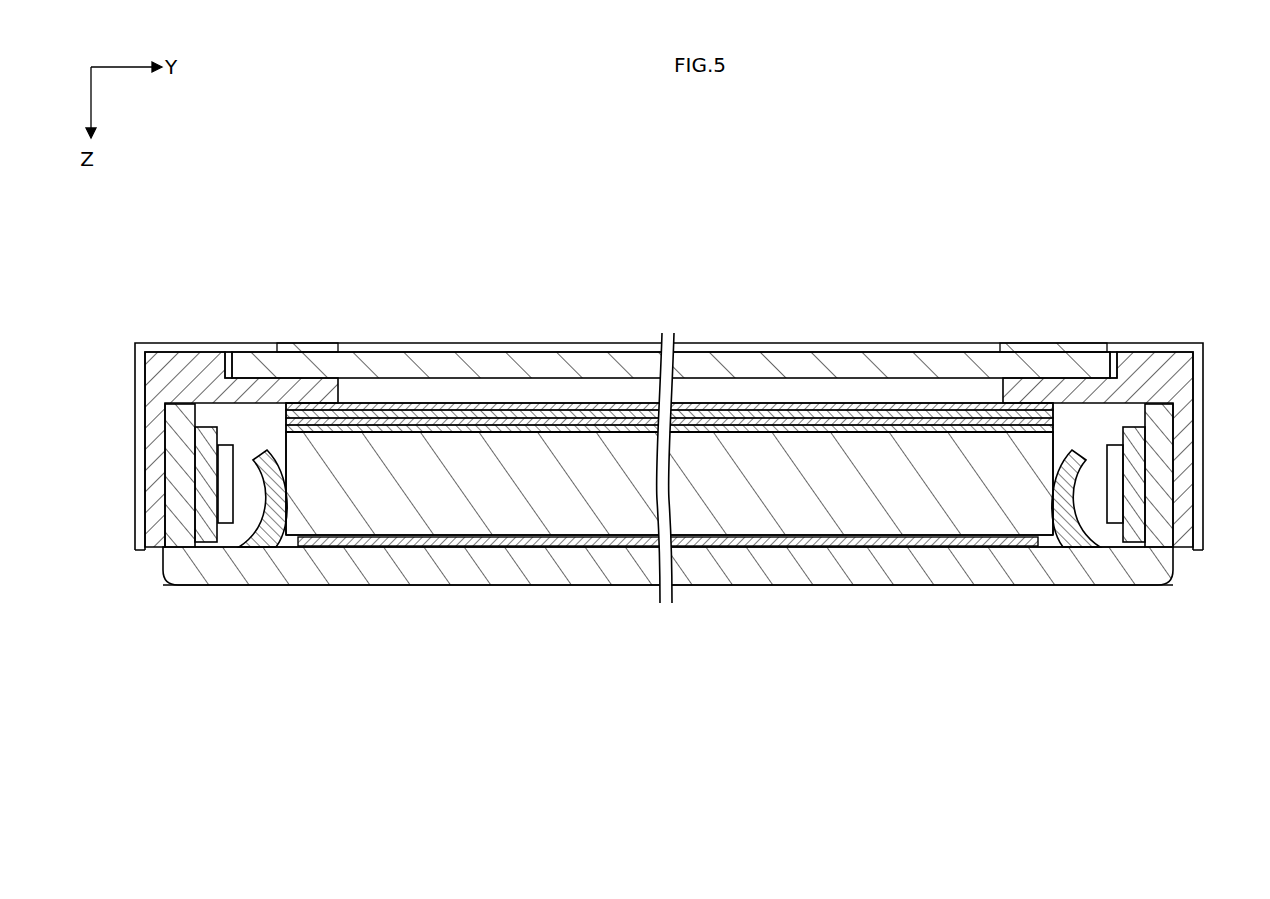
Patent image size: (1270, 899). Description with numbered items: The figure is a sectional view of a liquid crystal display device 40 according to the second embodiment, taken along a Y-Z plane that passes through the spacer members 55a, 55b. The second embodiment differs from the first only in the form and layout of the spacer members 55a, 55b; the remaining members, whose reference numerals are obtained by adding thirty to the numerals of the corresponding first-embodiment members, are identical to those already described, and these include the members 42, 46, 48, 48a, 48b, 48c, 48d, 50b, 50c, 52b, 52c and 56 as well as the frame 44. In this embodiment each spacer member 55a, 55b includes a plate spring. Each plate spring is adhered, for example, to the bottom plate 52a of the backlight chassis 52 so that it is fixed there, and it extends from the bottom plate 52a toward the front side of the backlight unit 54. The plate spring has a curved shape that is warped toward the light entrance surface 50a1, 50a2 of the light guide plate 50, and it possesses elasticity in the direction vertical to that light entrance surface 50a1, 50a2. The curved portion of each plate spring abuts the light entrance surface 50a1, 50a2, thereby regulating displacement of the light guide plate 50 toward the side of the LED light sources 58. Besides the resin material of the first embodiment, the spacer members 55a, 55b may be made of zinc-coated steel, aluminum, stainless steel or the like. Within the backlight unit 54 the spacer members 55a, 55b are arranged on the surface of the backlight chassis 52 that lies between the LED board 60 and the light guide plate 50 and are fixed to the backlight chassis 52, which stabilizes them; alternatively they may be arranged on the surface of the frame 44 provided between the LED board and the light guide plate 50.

The liquid crystal display device 40 is at (315, 303).
The cover 42 is at (163, 346).
The frame 44 is at (191, 370).
The cover plate 46 is at (272, 363).
The display panel 48 is at (669, 347).
The display panel first layer 48a is at (630, 304).
The display panel second layer 48b is at (503, 422).
The display panel third layer 48c is at (540, 413).
The display panel fourth layer 48d is at (597, 407).
The light guide plate 50 is at (652, 450).
The light entrance surface 50a1 is at (285, 453).
The light entrance surface 50a2 is at (1053, 448).
The top surface of battery 50b is at (951, 430).
The bottom surface of battery 50c is at (822, 538).
The backlight chassis 52 is at (672, 522).
The bottom plate 52a is at (555, 537).
The first side wall of case 52b is at (175, 473).
The second side wall of case 52c is at (1160, 478).
The backlight unit 54 is at (468, 598).
The spacer member 55a is at (279, 528).
The spacer member 55b is at (1066, 530).
The adhesive layer 56 is at (343, 546).
The LED light sources 58 is at (223, 444).
The LED board 60 is at (205, 515).